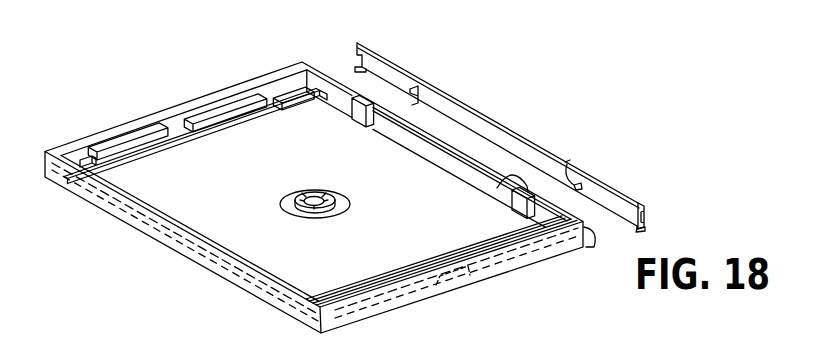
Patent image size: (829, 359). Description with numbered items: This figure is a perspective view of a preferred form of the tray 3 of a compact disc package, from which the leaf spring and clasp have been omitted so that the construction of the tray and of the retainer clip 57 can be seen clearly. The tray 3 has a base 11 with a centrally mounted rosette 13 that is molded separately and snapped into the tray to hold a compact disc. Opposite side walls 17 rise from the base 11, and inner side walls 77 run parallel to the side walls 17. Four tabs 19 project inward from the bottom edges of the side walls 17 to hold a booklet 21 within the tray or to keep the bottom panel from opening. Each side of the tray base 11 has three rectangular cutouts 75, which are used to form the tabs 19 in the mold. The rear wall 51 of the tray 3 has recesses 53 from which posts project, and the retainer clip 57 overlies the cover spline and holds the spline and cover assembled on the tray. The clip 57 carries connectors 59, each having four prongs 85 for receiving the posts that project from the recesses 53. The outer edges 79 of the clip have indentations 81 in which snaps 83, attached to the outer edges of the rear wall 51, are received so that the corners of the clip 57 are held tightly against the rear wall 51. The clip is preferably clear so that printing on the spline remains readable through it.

The tray 3 is at (423, 306).
The base 11 is at (277, 266).
The rosette 13 is at (343, 197).
The side walls 17 is at (163, 110).
The tabs 19 is at (452, 285).
The booklet 21 is at (218, 263).
The rear wall 51 is at (328, 72).
The recesses 53 is at (369, 100).
The retainer clip 57 is at (562, 115).
The connectors 59 is at (578, 189).
The rectangular cutouts 75 is at (370, 303).
The inner side walls 77 is at (187, 135).
The outer edges 79 is at (645, 203).
The indentations 81 is at (646, 214).
The snaps 83 is at (592, 248).
The prongs 85 is at (568, 163).